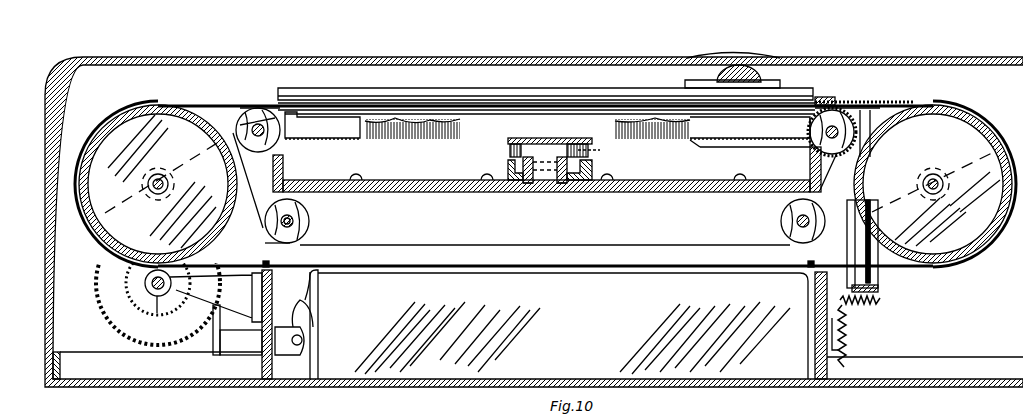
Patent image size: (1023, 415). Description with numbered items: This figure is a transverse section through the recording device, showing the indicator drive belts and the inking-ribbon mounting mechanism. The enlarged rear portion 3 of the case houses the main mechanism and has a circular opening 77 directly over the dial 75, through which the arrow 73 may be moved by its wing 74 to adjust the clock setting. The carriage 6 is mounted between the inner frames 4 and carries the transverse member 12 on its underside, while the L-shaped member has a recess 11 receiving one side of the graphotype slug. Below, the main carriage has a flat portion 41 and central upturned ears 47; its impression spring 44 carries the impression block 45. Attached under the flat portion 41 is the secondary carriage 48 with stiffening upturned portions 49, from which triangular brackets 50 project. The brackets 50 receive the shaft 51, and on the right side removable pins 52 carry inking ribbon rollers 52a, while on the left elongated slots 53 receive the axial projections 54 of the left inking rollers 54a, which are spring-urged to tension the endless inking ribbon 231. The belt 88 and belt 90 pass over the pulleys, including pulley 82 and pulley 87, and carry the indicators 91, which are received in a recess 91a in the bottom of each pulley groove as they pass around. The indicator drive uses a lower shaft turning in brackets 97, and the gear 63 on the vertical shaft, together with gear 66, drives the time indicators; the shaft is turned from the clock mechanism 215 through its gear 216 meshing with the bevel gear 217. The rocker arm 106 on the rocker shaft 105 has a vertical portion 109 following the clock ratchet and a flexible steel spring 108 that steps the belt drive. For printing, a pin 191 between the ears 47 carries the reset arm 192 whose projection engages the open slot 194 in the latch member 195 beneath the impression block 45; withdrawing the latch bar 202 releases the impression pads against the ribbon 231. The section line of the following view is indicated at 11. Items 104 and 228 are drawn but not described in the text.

The enlarged rear portion 3 is at (150, 58).
The inner frame 4 is at (279, 290).
The carriage 6 is at (655, 94).
The recess 11 is at (522, 82).
The transverse member 12 is at (540, 100).
The flat portion 41 is at (692, 188).
The impression spring 44 is at (768, 146).
The impression block 45 is at (712, 132).
The upturned ears 47 is at (524, 165).
The secondary carriage 48 is at (470, 188).
The upturned portions 49 is at (283, 172).
The bracket 50 is at (242, 114).
The shaft 51 is at (150, 188).
The removable pin 52 is at (814, 170).
The inking ribbon roller 52a is at (784, 228).
The elongated slot 53 is at (310, 226).
The axial projection 54 is at (273, 160).
The left inking roller 54a is at (268, 244).
The gear 63 is at (900, 105).
The gear 66 is at (838, 102).
The arrow 73 is at (698, 80).
The wing 74 is at (765, 62).
The dial 75 is at (818, 97).
The circular opening 77 is at (730, 56).
The pulley 82 is at (960, 110).
The pulley 87 is at (103, 118).
The endless flat metallic belt 88 is at (886, 272).
The belt 90 is at (256, 106).
The indicator 91 is at (298, 120).
The recess 91a is at (878, 165).
The bracket 97 is at (152, 300).
The pivot pin 104 is at (318, 340).
The rocker shaft 105 is at (318, 320).
The rocker arm 106 is at (248, 343).
The spring 108 is at (216, 332).
The vertical portion 109 is at (320, 300).
The pin 191 is at (592, 155).
The reset arm 192 is at (538, 186).
The open slot 194 is at (526, 138).
The latch member 195 is at (572, 140).
The latch bar 202 is at (568, 186).
The clock mechanism 215 is at (565, 275).
The gear 216 is at (852, 340).
The bevel gear 217 is at (882, 302).
The brush 228 is at (492, 115).
The inking ribbon 231 is at (352, 245).